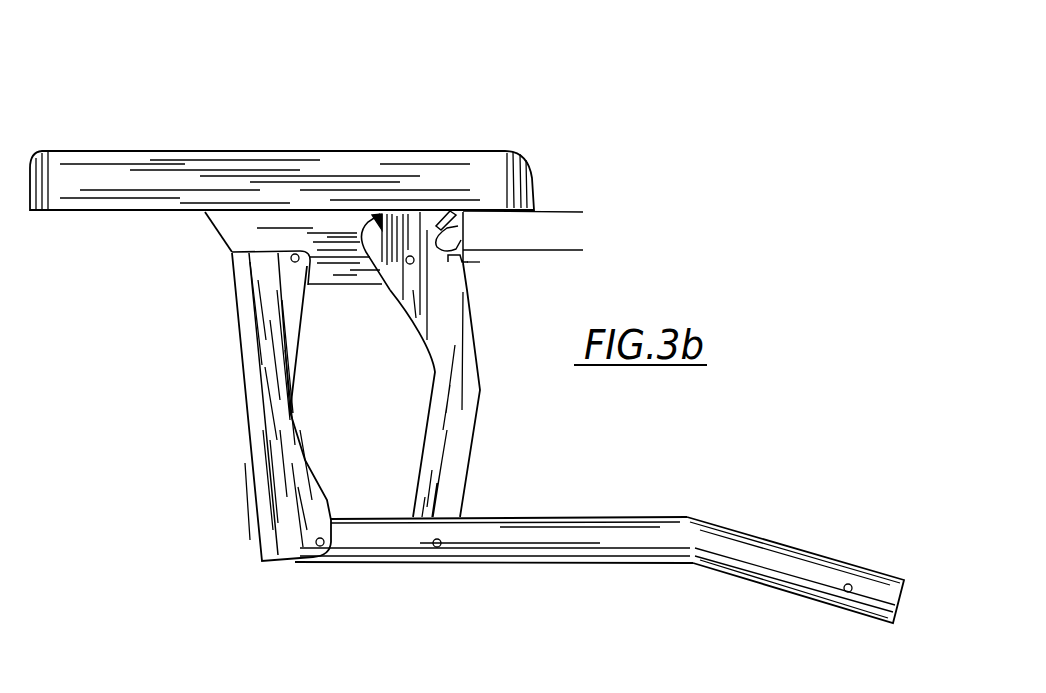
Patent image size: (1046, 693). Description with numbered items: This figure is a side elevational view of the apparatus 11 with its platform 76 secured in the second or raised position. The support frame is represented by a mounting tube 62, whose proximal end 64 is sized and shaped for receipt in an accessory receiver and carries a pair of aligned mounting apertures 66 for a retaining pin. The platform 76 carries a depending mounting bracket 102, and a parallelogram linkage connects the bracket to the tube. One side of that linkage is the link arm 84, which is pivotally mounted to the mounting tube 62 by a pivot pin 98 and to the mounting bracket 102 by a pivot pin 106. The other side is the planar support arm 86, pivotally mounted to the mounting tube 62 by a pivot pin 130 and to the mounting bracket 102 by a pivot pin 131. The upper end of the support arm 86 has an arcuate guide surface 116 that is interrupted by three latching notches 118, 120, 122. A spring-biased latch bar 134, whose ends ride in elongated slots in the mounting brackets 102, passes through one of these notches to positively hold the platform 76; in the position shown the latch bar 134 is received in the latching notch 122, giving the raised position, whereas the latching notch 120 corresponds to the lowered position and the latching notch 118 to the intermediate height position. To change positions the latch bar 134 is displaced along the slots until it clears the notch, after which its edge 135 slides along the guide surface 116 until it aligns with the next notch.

The apparatus 11 is at (657, 167).
The mounting tube 62 is at (595, 517).
The proximal end 64 is at (780, 553).
The mounting aperture 66 is at (844, 592).
The platform 76 is at (443, 160).
The link arm 84 is at (250, 365).
The support arm 86 is at (470, 409).
The pivot pin 98 is at (318, 547).
The mounting bracket 102 is at (335, 284).
The pivot pin 106 is at (290, 253).
The guide surface 116 is at (463, 233).
The latching notch 118 is at (467, 261).
The latching notch 120 is at (373, 216).
The latching notch 122 is at (440, 220).
The pivot pin 130 is at (434, 548).
The pivot pin 131 is at (413, 264).
The latch bar 134 is at (548, 216).
The edge 135 is at (548, 255).